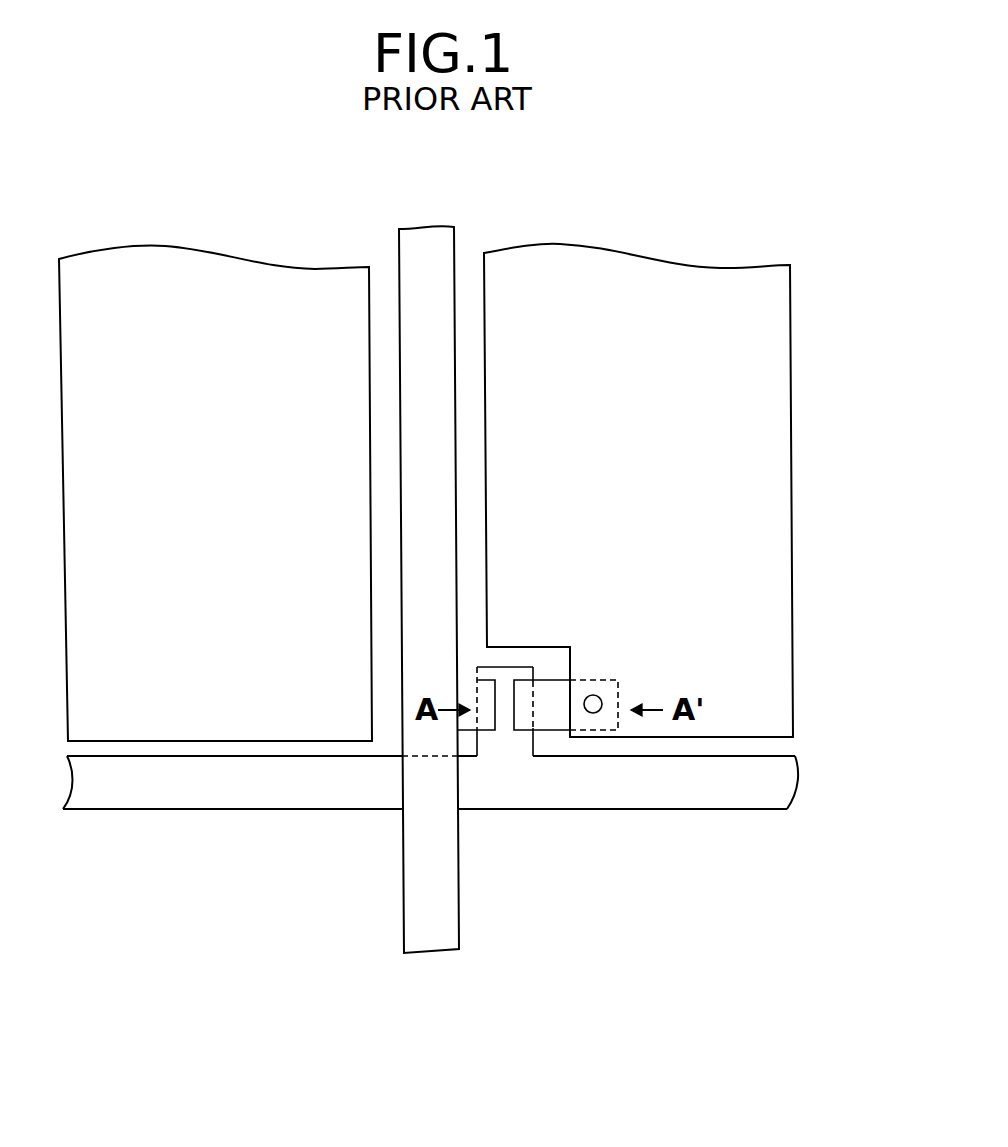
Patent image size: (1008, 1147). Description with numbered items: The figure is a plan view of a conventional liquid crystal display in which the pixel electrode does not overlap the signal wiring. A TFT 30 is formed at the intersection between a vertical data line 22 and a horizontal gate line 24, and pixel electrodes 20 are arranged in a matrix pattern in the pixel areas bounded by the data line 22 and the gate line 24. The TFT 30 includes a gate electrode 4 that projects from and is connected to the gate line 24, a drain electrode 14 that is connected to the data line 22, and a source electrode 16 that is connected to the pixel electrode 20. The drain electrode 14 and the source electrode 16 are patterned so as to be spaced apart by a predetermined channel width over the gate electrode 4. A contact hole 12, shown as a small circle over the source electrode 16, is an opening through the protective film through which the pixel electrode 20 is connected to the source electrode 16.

The gate electrode 4 is at (512, 673).
The contact hole 12 is at (601, 699).
The drain electrode 14 is at (485, 695).
The source electrode 16 is at (594, 695).
The pixel electrode 20 is at (785, 646).
The data line 22 is at (426, 923).
The gate line 24 is at (790, 767).
The TFT 30 is at (513, 661).